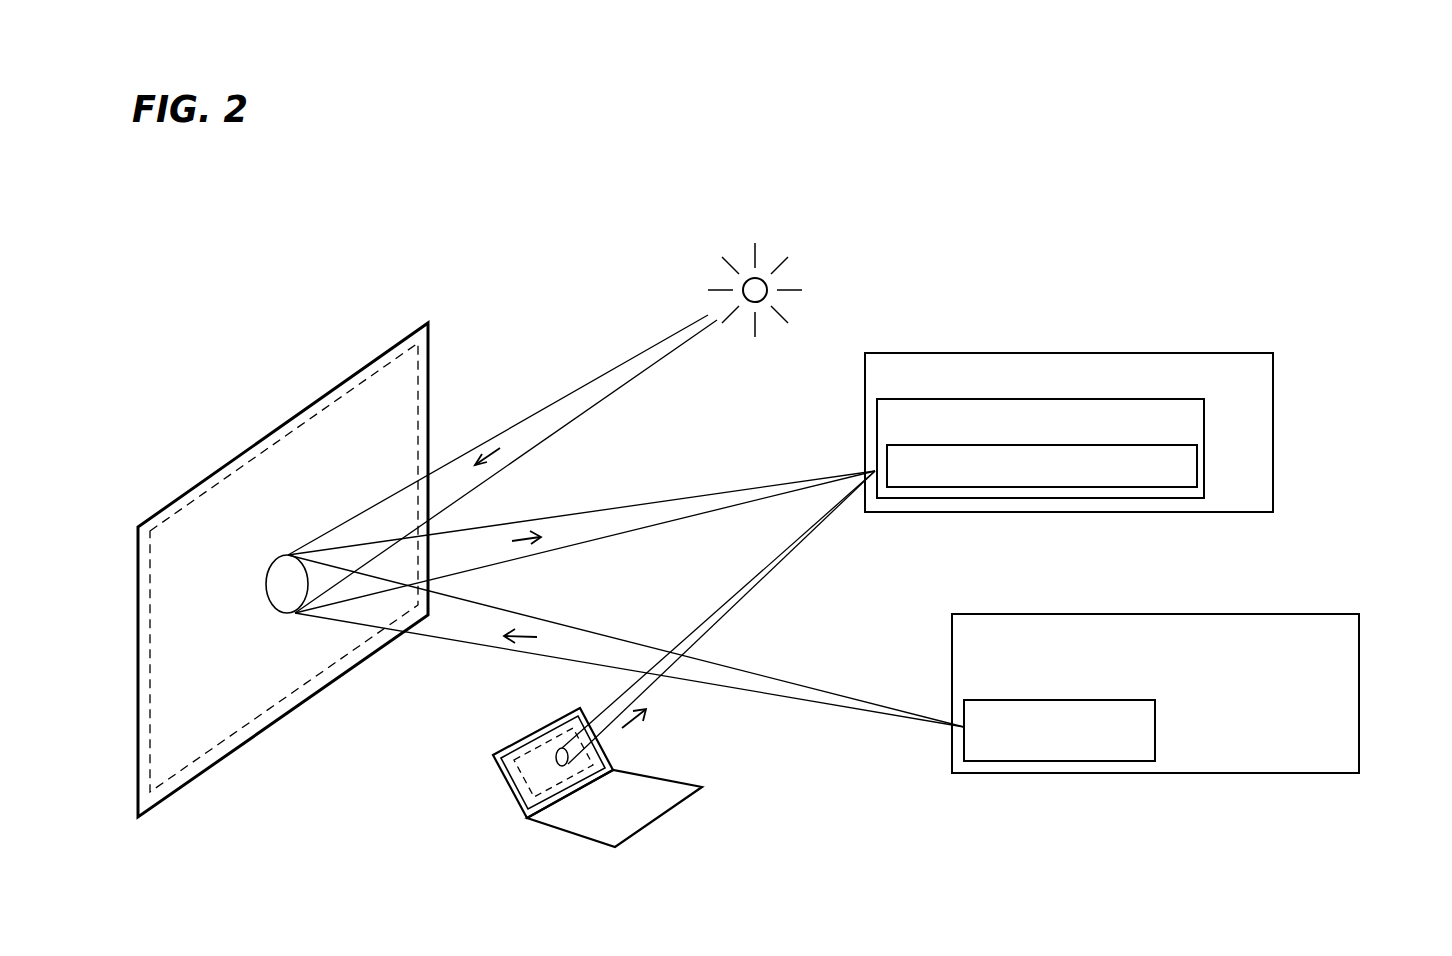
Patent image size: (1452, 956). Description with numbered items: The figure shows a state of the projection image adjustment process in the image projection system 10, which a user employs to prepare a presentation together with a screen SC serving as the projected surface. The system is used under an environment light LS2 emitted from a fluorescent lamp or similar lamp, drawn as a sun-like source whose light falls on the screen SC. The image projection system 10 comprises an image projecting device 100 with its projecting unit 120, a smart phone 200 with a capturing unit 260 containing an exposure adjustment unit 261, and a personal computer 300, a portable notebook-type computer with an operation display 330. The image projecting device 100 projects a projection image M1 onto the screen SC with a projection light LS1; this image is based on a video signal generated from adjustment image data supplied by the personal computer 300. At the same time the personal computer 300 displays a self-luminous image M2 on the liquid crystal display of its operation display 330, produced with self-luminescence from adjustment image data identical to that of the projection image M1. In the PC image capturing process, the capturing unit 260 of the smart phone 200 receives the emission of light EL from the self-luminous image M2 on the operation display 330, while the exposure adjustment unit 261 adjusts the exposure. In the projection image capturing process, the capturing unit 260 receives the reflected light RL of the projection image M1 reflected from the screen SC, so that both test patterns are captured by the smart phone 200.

The image projection system 10 is at (1364, 320).
The image projecting device 100 is at (1189, 693).
The projecting unit 120 is at (1155, 722).
The smart phone 200 is at (1101, 432).
The capturing unit 260 is at (1204, 440).
The exposure adjustment unit 261 is at (1088, 445).
The personal computer 300 is at (584, 770).
The operation display 330 is at (528, 735).
The screen SC is at (430, 350).
The projection image M1 is at (378, 373).
The self-luminous image M2 is at (495, 760).
The projection light LS1 is at (572, 626).
The environment light LS2 is at (708, 252).
The reflected light RL is at (665, 497).
The emission of light EL is at (740, 583).